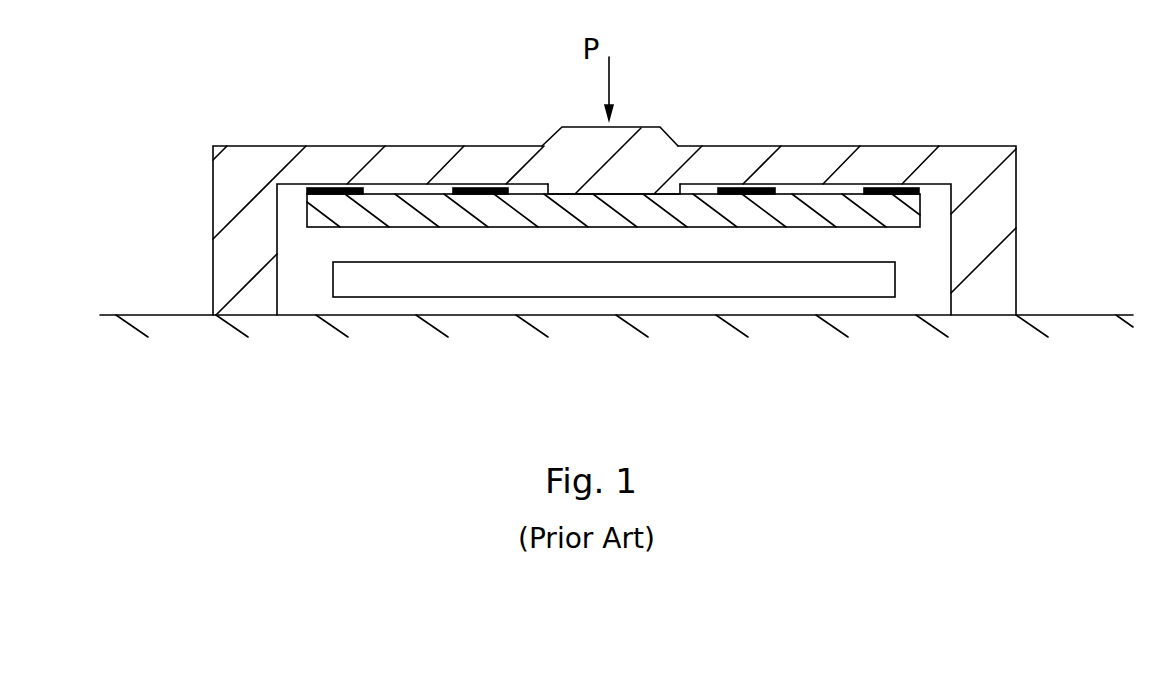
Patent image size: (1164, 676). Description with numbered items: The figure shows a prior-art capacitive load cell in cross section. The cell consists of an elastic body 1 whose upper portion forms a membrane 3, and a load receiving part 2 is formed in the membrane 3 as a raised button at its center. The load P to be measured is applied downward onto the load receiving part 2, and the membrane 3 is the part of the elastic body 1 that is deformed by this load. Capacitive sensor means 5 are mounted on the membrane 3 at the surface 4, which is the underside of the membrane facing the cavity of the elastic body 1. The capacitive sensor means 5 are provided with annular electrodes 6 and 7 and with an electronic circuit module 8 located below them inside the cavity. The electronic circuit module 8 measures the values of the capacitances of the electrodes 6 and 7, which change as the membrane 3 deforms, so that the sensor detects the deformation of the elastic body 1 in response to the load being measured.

The elastic body 1 is at (987, 223).
The load receiving part 2 is at (660, 127).
The membrane 3 is at (388, 167).
The surface 4 is at (613, 195).
The capacitive sensor means 5 is at (342, 217).
The annular electrode 6 is at (752, 188).
The annular electrode 7 is at (893, 192).
The electronic circuit module 8 is at (614, 279).